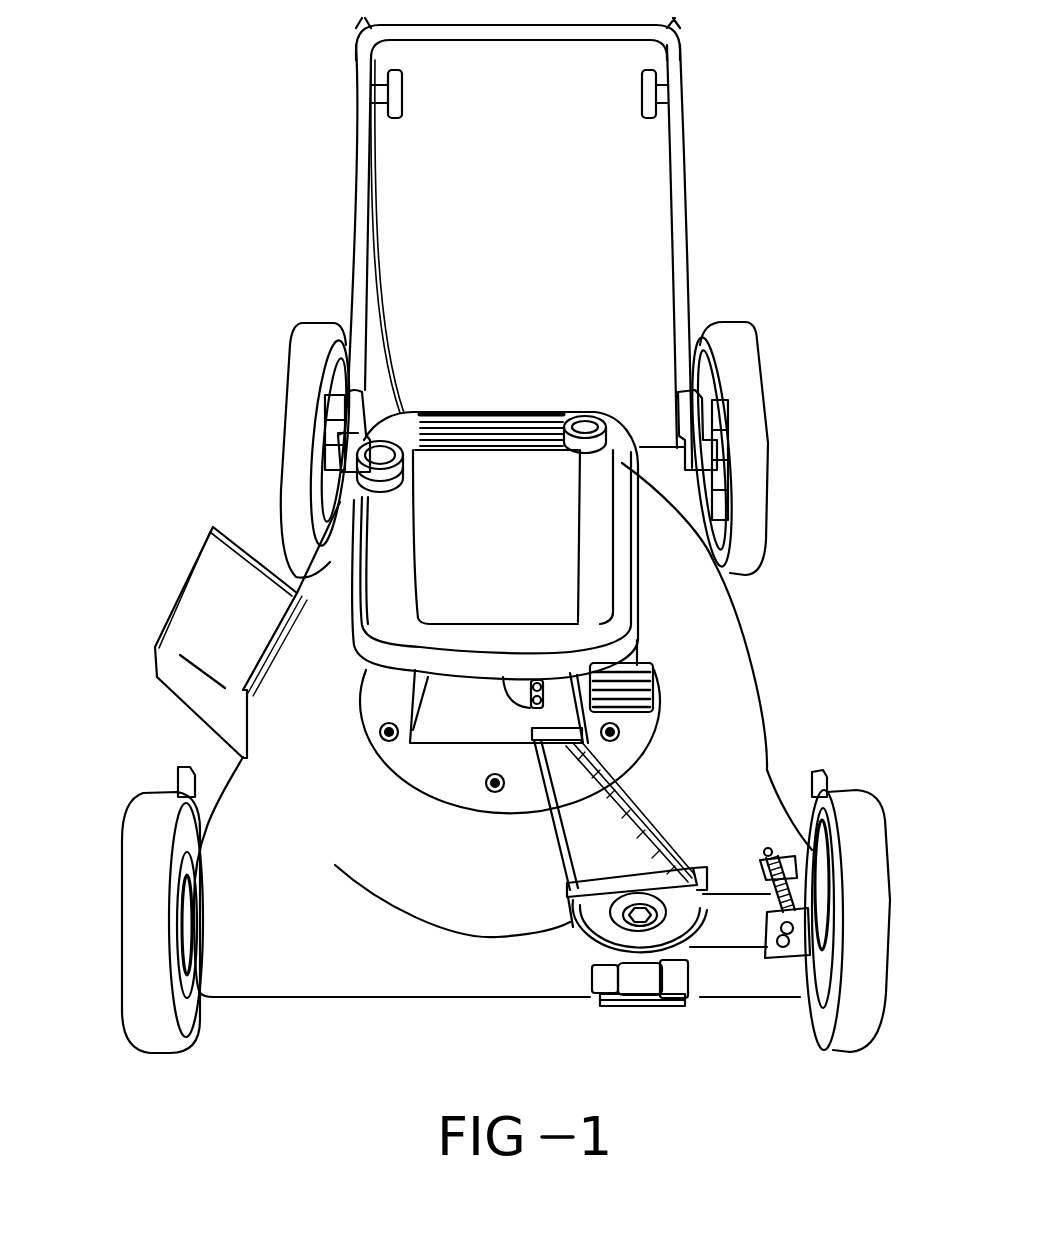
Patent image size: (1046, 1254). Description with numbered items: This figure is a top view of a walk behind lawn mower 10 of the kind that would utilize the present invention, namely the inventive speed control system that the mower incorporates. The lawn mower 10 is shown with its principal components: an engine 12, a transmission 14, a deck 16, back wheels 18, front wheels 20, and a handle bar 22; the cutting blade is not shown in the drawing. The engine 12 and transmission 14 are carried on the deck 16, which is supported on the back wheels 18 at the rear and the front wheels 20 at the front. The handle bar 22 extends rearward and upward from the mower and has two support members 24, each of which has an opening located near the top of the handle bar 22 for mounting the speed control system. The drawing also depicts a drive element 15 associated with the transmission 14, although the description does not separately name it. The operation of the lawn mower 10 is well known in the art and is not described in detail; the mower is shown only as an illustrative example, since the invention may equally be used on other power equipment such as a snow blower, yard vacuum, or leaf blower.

The walk behind lawn mower 10 is at (250, 362).
The engine 12 is at (393, 515).
The transmission 14 is at (648, 980).
The drive belt 15 is at (615, 780).
The deck 16 is at (688, 615).
The back wheels 18 is at (748, 407).
The front wheels 20 is at (152, 865).
The handle bar 22 is at (330, 152).
The support members 24 is at (680, 193).